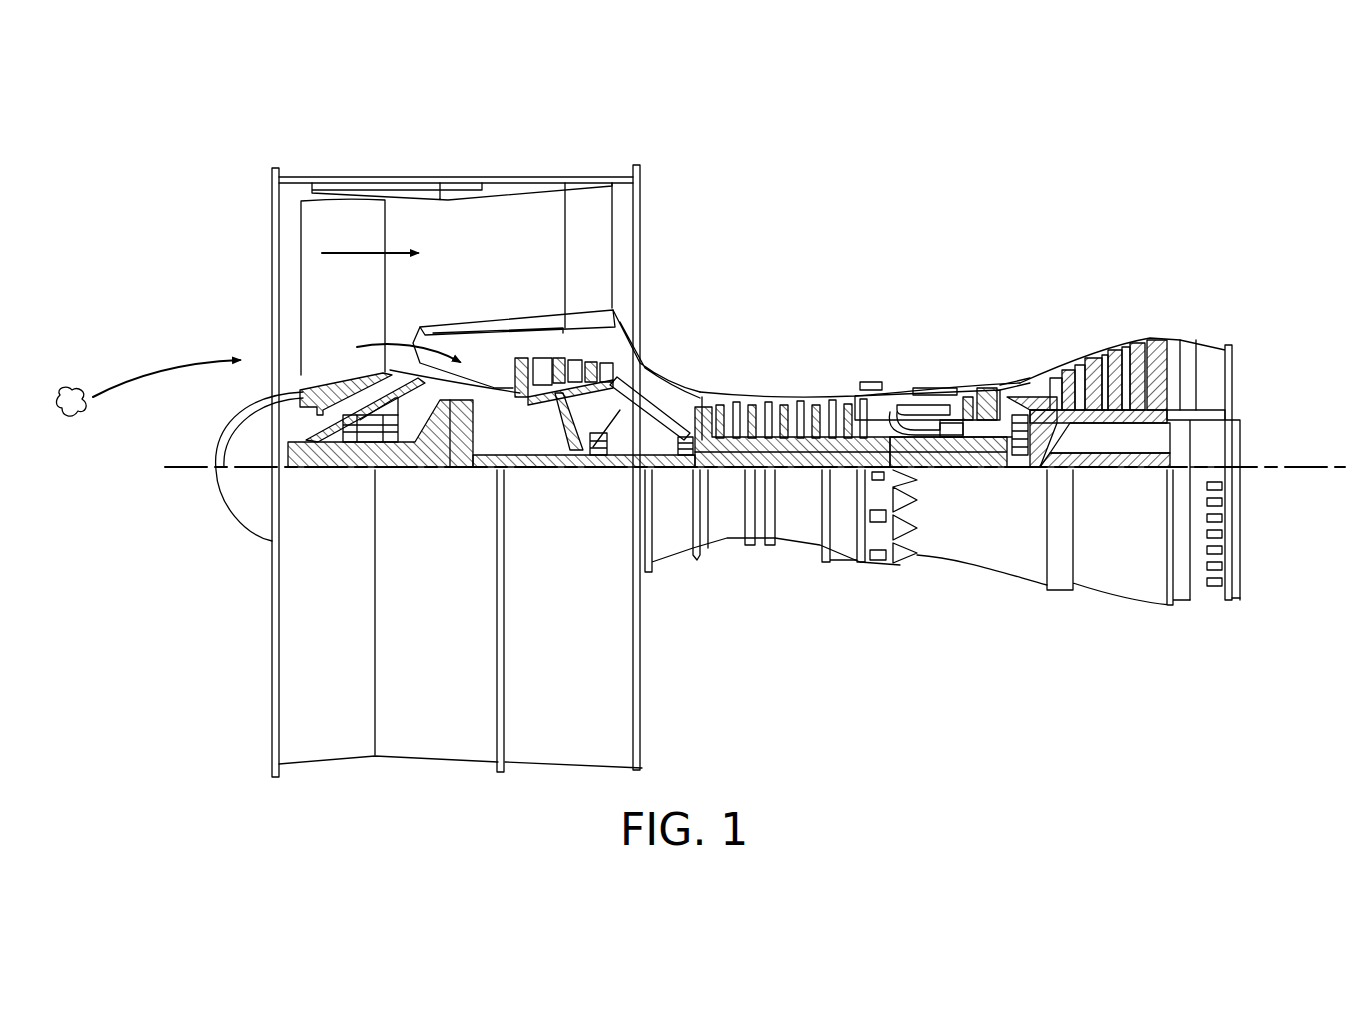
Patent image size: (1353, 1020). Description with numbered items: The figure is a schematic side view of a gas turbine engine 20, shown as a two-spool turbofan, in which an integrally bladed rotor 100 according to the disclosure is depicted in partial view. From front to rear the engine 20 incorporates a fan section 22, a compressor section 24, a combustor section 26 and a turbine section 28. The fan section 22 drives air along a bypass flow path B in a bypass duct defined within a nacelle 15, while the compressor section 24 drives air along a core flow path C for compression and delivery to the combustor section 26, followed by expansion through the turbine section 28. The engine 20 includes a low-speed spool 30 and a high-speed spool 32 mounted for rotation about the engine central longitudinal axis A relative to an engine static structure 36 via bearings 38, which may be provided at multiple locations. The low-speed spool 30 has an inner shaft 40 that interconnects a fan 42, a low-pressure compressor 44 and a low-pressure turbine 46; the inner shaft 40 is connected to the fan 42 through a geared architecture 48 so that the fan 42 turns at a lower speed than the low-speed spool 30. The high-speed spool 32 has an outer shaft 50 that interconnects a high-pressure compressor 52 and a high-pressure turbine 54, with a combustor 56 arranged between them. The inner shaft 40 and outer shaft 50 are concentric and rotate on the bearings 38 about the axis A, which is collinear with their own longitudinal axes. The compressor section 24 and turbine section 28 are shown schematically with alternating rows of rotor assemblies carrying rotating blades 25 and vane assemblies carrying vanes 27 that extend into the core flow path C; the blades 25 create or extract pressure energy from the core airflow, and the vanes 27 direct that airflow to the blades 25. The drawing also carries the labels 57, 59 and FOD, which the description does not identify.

The gas turbine engine 20 is at (922, 218).
The fan section 22 is at (382, 166).
The compressor section 24 is at (690, 372).
The combustor section 26 is at (915, 360).
The turbine section 28 is at (1070, 323).
The nacelle 15 is at (456, 178).
The fan 42 is at (366, 298).
The blades 25 is at (524, 365).
The vanes 27 is at (543, 362).
The low-pressure compressor 44 is at (562, 372).
The integrally bladed rotor 100 is at (720, 408).
The high-pressure compressor 52 is at (773, 440).
The high-speed spool 32 is at (845, 392).
The combustor 56 is at (920, 408).
The high-pressure turbine 54 is at (990, 385).
The mid-turbine frame 57 is at (1032, 374).
The low-pressure turbine 46 is at (1120, 360).
The airfoil 59 is at (1062, 424).
The outer shaft 50 is at (925, 457).
The bearings 38 is at (600, 447).
The geared architecture 48 is at (460, 447).
The inner shaft 40 is at (672, 470).
The low-speed spool 30 is at (800, 478).
The engine static structure 36 is at (845, 565).
The engine central longitudinal axis A is at (1308, 467).
The bypass flow path B is at (322, 253).
The core flow path C is at (397, 347).
The foreign object debris FOD is at (90, 438).